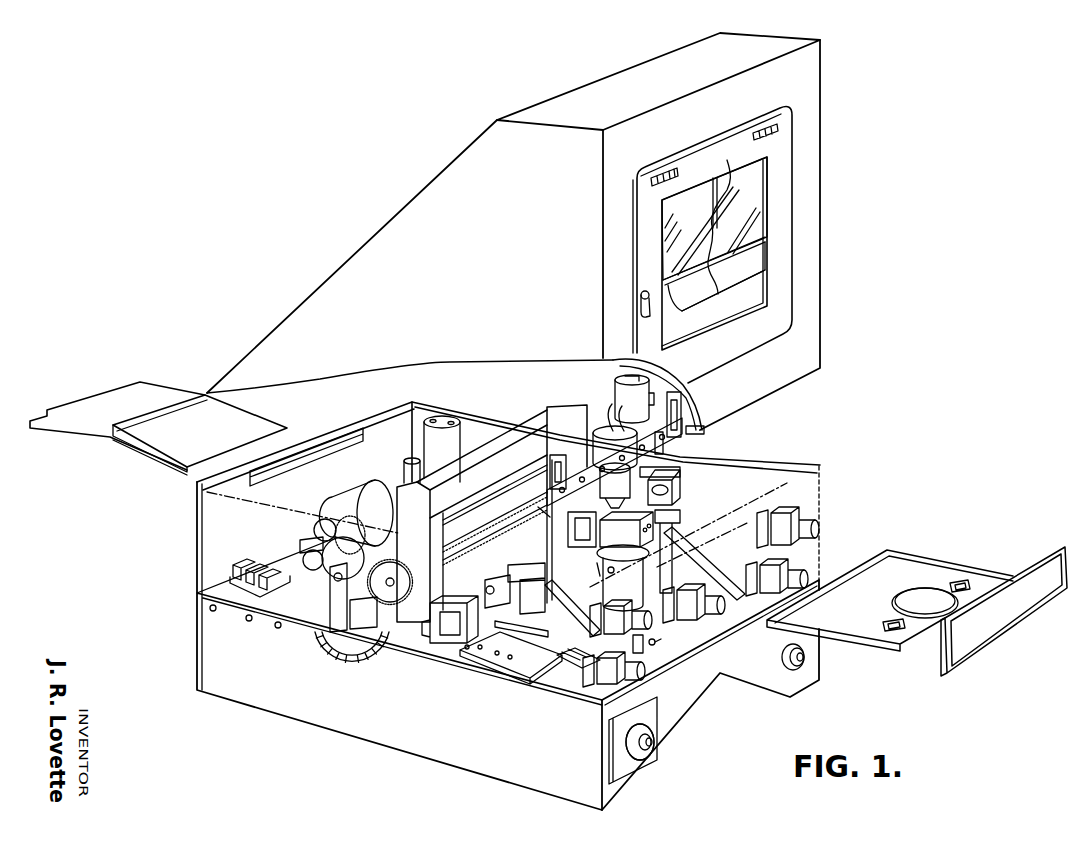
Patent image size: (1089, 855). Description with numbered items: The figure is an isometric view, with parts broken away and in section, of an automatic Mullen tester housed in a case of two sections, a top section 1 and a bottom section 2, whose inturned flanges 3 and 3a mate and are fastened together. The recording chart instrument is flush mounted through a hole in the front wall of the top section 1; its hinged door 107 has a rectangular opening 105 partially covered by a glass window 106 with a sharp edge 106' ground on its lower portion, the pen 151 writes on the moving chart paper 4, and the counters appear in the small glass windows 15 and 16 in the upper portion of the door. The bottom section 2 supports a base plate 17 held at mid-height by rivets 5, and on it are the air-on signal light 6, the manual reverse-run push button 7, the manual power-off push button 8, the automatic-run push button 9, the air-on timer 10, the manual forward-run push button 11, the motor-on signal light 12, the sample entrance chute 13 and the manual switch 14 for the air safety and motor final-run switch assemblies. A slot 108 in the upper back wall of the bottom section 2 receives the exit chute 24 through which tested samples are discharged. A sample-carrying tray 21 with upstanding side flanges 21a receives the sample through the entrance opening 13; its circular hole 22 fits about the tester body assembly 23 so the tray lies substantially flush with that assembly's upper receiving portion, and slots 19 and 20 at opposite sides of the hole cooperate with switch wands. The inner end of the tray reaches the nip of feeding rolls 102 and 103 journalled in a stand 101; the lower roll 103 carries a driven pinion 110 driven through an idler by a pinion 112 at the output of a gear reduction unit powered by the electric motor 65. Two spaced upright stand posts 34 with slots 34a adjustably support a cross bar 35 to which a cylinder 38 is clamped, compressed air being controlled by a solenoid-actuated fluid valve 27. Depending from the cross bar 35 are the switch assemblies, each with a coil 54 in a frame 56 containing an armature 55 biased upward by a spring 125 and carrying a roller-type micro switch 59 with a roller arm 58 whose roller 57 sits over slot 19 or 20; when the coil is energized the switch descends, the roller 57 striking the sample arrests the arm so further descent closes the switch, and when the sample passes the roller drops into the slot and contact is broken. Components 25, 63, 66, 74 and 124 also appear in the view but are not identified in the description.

The top section 1 is at (393, 233).
The bottom section 2 is at (233, 690).
The inturned flange 3 is at (784, 461).
The inturned flange 3a is at (704, 432).
The chart 4 is at (755, 268).
The rivets 5 is at (247, 621).
The air-on signal light 6 is at (818, 537).
The manual reverse run motor push button 7 is at (812, 586).
The manual power-off push button 8 is at (800, 666).
The automatic-run push button 9 is at (718, 613).
The air-on timer 10 is at (644, 752).
The manual forward-run motor push button 11 is at (640, 675).
The motor-on signal light 12 is at (652, 627).
The sample entrance chute 13 is at (1018, 613).
The manual switch 14 is at (656, 642).
The glass window 15 is at (670, 173).
The glass window 16 is at (763, 130).
The base plate 17 is at (364, 651).
The slot 19 is at (897, 634).
The slot 20 is at (968, 585).
The sample-carrying tray 21 is at (896, 566).
The upstanding side flanges 21a is at (950, 562).
The circular hole 22 is at (893, 602).
The tester body assembly 23 is at (645, 590).
The exit chute 24 is at (120, 451).
The block 25 is at (621, 553).
The solenoid actuated fluid valve 27 is at (642, 377).
The upright stand posts 34 is at (688, 388).
The slot 34a is at (681, 410).
The cross bar 35 is at (652, 435).
The cylinder 38 is at (625, 459).
The coil 54 is at (673, 490).
The armature 55 is at (560, 551).
The frame 56 is at (672, 474).
The rollers 57 is at (688, 533).
The roller arm 58 is at (598, 576).
The roller type micro switch 59 is at (682, 512).
The post 63 is at (409, 459).
The electric motor 65 is at (353, 487).
The connector 66 is at (253, 564).
The cylinder 74 is at (442, 416).
The stand 101 is at (545, 420).
The feeding roll 102 is at (504, 504).
The lower roll 103 is at (502, 532).
The rectangular shaped opening 105 is at (773, 292).
The glass window 106 is at (762, 218).
The sharp edge 106' is at (764, 264).
The hinged door 107 is at (780, 313).
The slot 108 is at (336, 449).
The driven pinion 110 is at (392, 600).
The pinion 112 is at (307, 556).
The bar 124 is at (684, 453).
The spring 125 is at (533, 506).
The pen 151 is at (727, 160).